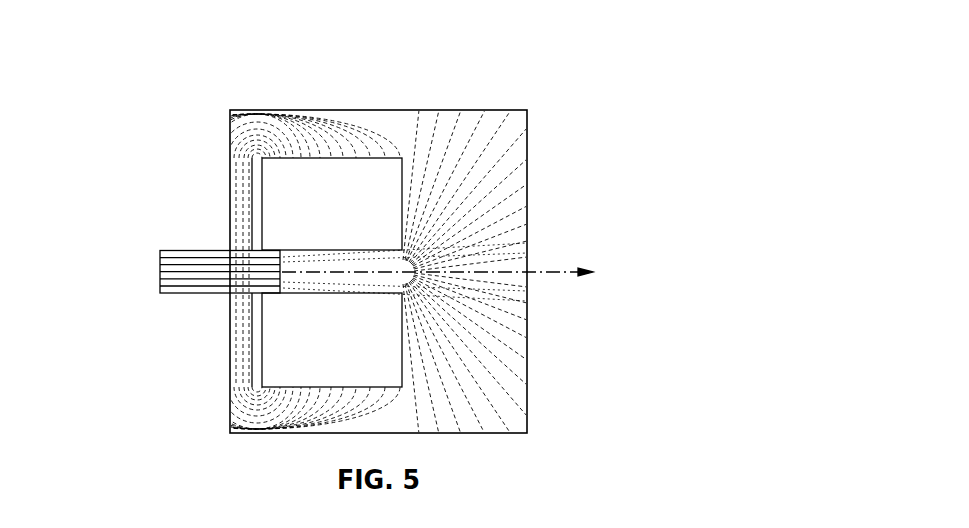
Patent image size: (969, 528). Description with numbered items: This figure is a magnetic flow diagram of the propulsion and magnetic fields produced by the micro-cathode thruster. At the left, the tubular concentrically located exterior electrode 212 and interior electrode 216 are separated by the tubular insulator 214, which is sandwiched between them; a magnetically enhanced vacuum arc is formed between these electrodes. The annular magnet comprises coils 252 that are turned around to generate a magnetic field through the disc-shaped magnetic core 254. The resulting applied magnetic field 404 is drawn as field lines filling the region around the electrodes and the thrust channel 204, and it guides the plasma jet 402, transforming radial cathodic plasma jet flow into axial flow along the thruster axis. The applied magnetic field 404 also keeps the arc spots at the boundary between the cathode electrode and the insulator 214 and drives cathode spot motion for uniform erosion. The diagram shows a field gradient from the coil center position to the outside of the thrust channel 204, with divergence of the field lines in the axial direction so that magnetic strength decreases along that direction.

The thrust channel 204 is at (327, 258).
The exterior electrode 212 is at (193, 251).
The tubular insulator 214 is at (160, 258).
The interior electrode 216 is at (159, 282).
The coils 252 is at (343, 157).
The magnetic core 254 is at (253, 170).
The plasma jet 402 is at (557, 272).
The applied magnetic field 404 is at (473, 181).